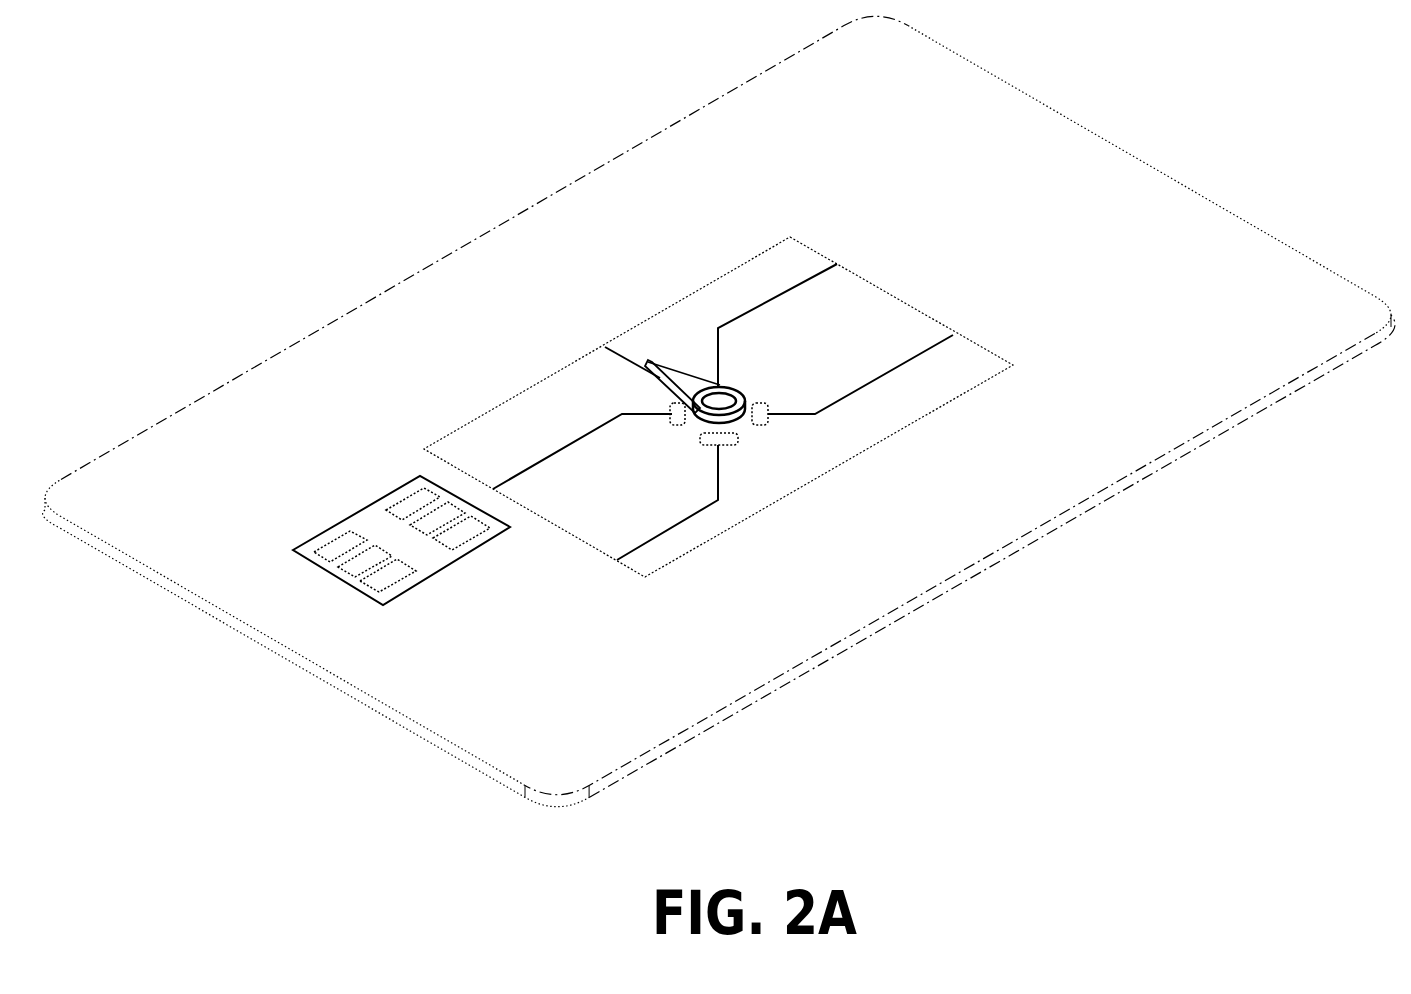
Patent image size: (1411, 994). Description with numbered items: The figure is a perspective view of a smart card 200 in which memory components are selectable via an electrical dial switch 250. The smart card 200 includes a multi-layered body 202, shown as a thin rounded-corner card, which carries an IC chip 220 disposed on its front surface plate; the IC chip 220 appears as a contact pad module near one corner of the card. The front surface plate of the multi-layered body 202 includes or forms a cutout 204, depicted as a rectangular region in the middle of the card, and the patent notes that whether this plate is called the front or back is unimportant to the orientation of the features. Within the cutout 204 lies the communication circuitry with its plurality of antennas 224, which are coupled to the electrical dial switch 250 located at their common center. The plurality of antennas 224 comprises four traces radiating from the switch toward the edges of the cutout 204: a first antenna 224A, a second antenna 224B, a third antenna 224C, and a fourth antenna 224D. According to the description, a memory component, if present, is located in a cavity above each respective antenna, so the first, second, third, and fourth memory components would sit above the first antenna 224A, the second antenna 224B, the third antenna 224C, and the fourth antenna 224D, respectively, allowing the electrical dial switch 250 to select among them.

The smart card 200 is at (276, 201).
The multi-layered body 202 is at (920, 603).
The cutout 204 is at (863, 278).
The IC chip 220 is at (420, 583).
The plurality of antennas 224 is at (680, 338).
The first antenna 224A is at (546, 461).
The second antenna 224B is at (653, 537).
The third antenna 224C is at (800, 281).
The fourth antenna 224D is at (873, 384).
The electrical dial switch 250 is at (648, 392).